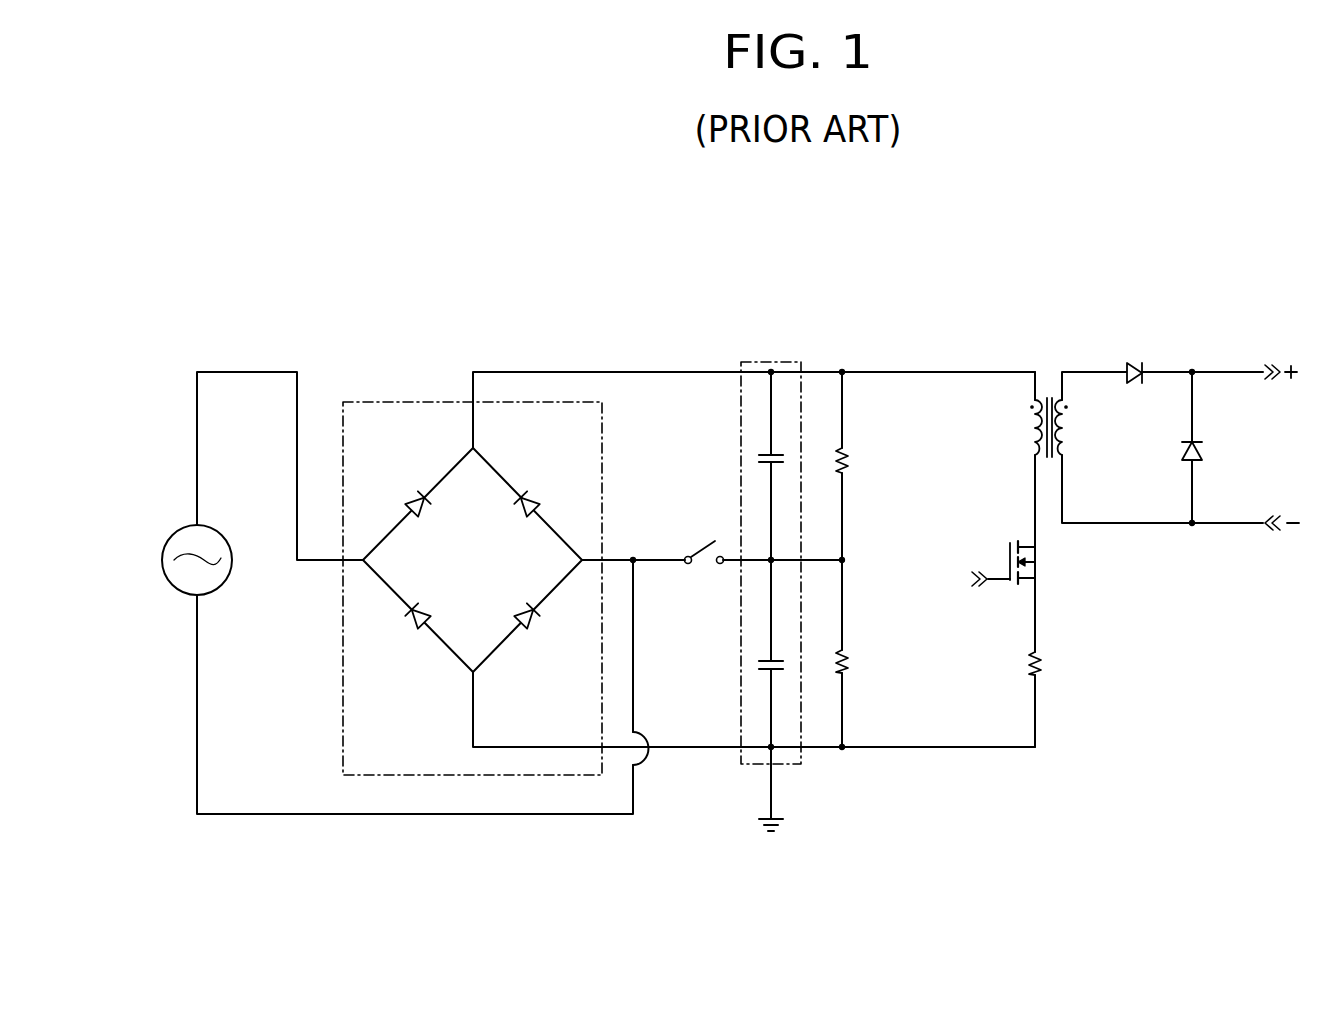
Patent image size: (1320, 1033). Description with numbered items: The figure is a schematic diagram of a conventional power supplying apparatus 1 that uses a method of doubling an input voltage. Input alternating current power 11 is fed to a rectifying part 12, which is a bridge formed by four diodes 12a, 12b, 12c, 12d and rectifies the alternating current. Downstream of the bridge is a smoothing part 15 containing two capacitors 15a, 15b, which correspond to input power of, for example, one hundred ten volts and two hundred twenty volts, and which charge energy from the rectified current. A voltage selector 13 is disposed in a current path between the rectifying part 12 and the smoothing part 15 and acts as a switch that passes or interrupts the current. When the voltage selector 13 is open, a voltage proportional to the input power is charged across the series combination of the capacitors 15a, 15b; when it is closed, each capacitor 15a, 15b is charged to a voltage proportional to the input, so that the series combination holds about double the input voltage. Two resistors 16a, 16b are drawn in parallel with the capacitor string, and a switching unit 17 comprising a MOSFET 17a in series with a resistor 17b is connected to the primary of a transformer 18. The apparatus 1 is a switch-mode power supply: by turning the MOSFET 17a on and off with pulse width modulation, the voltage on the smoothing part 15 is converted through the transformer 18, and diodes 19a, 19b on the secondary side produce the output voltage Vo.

The power supplying apparatus 1 is at (698, 556).
The input alternating current power 11 is at (172, 530).
The rectifying part 12 is at (561, 402).
The diode 12a is at (414, 497).
The diode 12b is at (535, 501).
The diode 12c is at (420, 628).
The diode 12d is at (528, 628).
The voltage selector 13 is at (694, 554).
The smoothing part 15 is at (748, 768).
The capacitor 15a is at (757, 456).
The capacitor 15b is at (757, 662).
The first resistor 16a is at (849, 455).
The second resistor 16b is at (849, 660).
The switching unit 17 is at (1165, 561).
The MOSFET 17a is at (1025, 561).
The sensing resistor 17b is at (1045, 659).
The transformer 18 is at (1043, 398).
The diode 19a is at (1131, 366).
The diode 19b is at (1203, 452).